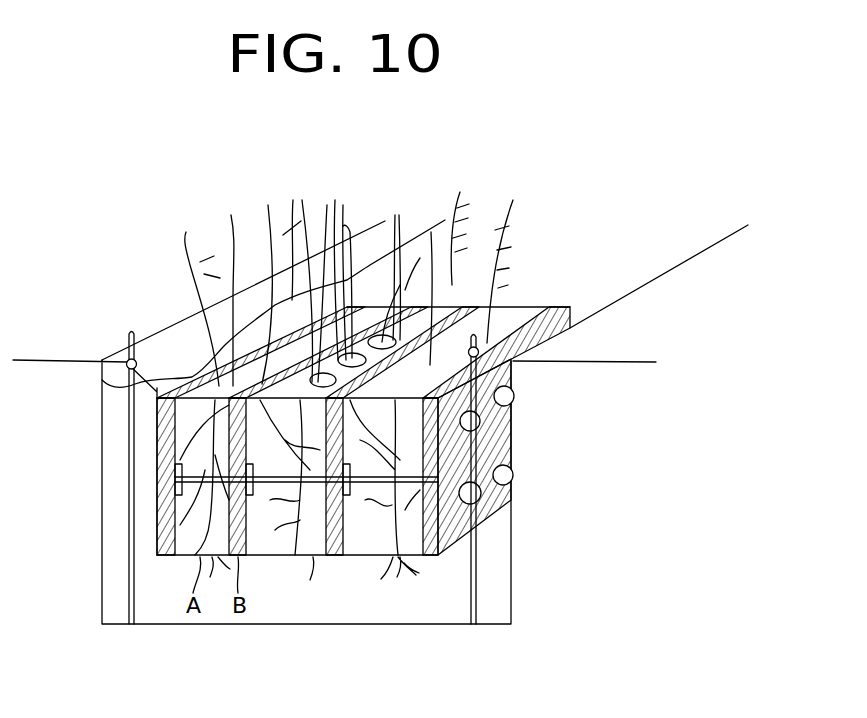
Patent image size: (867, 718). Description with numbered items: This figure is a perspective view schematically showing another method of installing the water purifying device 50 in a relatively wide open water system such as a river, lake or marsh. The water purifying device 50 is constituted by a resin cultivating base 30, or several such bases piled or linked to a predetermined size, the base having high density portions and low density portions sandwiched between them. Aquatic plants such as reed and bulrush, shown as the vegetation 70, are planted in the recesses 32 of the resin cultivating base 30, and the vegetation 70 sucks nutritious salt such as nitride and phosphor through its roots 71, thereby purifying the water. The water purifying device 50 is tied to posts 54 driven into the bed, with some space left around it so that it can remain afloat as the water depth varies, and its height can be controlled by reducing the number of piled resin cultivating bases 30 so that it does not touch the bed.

The resin cultivating base 30 is at (157, 512).
The recesses 32 is at (182, 410).
The water purifying device 50 is at (173, 343).
The posts 54 is at (123, 592).
The vegetation 70 is at (498, 286).
The roots 71 is at (313, 575).